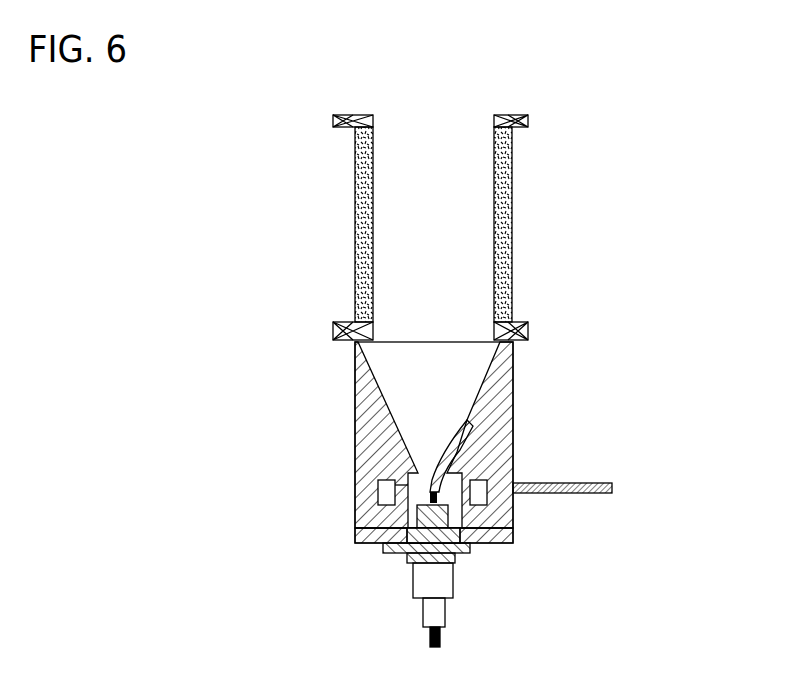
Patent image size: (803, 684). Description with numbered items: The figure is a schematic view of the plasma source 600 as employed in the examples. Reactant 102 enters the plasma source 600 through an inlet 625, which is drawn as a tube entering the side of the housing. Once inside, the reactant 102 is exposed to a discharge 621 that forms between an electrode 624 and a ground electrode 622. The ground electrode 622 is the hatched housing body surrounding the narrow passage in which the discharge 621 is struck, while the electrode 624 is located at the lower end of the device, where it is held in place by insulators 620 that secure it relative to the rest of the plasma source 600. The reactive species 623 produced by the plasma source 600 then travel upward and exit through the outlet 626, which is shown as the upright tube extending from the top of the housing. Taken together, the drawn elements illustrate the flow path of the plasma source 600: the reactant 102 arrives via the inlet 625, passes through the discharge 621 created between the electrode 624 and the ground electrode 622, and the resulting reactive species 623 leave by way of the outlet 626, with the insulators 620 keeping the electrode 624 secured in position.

The plasma source 600 is at (571, 144).
The outlet 626 is at (434, 181).
The reactive species 623 is at (438, 147).
The ground electrode 622 is at (516, 376).
The discharge 621 is at (452, 460).
The reactant 102 is at (626, 488).
The inlet 625 is at (590, 470).
The insulators 620 is at (436, 517).
The electrode 624 is at (456, 635).